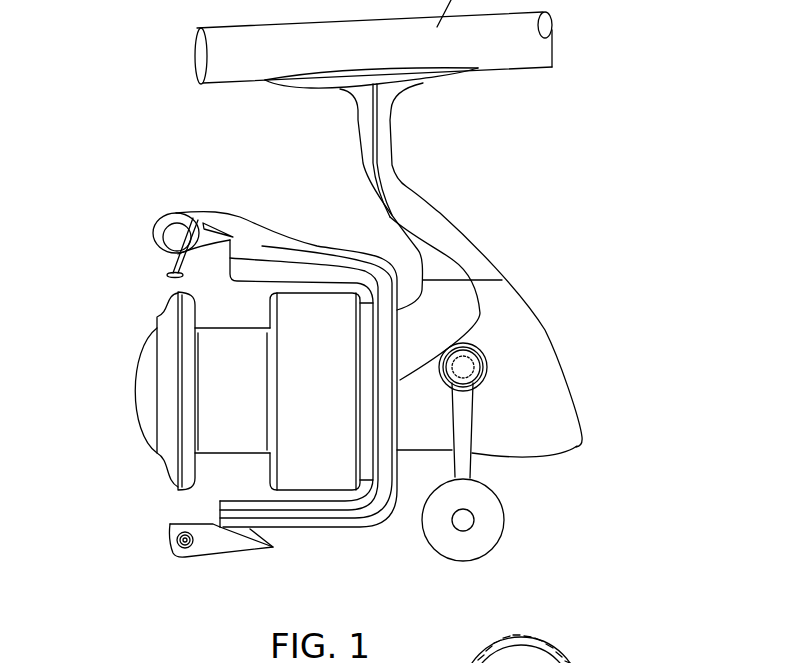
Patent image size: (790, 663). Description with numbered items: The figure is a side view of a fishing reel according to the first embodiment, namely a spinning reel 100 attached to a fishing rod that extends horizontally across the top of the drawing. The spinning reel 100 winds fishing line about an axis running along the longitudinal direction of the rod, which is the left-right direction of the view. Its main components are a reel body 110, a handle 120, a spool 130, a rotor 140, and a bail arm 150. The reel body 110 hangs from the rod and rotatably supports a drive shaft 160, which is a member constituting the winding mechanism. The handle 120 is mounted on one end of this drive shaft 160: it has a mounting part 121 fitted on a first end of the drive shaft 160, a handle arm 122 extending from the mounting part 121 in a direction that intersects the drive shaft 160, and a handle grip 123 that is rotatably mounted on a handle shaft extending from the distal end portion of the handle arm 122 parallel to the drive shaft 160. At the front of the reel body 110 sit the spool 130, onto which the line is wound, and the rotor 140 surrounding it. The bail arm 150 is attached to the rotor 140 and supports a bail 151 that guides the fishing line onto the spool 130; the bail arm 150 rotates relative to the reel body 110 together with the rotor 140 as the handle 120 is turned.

The spinning reel 100 is at (120, 198).
The reel body 110 is at (522, 320).
The handle 120 is at (549, 483).
The mounting part 121 is at (488, 375).
The handle arm 122 is at (467, 463).
The handle grip 123 is at (467, 553).
The spool 130 is at (235, 447).
The rotor 140 is at (327, 530).
The bail arm 150 is at (256, 233).
The bail 151 is at (172, 258).
The drive shaft 160 is at (488, 360).